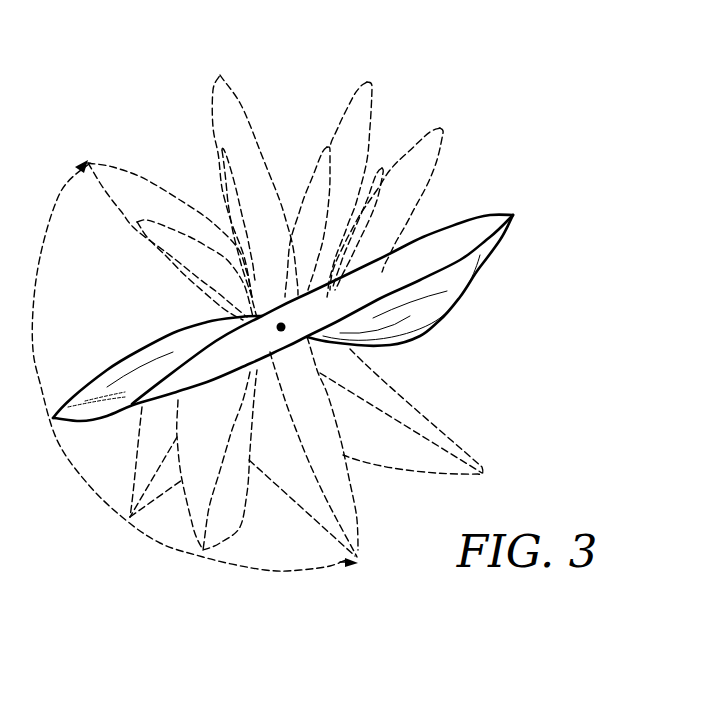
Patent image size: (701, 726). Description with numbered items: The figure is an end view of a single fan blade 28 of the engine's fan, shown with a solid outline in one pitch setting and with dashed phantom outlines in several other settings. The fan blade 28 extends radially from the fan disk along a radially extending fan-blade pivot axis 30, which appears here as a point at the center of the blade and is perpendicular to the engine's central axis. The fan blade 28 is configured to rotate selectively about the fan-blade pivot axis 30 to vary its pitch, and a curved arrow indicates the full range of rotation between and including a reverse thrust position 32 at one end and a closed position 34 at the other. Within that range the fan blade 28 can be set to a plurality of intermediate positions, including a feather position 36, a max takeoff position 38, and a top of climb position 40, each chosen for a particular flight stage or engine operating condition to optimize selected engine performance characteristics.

The fan blade 28 is at (468, 292).
The fan-blade pivot axis 30 is at (281, 322).
The reverse thrust position 32 is at (130, 172).
The closed position 34 is at (360, 530).
The feather position 36 is at (150, 347).
The max takeoff (MTO) position 38 is at (233, 523).
The top of climb (TOC) position 40 is at (151, 532).